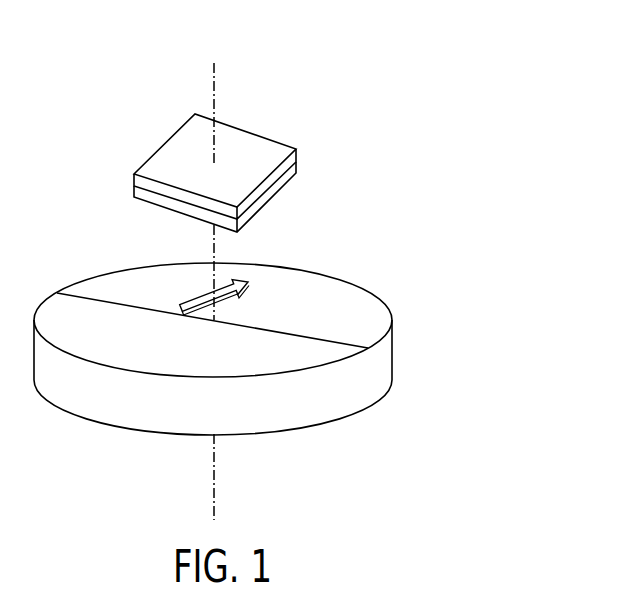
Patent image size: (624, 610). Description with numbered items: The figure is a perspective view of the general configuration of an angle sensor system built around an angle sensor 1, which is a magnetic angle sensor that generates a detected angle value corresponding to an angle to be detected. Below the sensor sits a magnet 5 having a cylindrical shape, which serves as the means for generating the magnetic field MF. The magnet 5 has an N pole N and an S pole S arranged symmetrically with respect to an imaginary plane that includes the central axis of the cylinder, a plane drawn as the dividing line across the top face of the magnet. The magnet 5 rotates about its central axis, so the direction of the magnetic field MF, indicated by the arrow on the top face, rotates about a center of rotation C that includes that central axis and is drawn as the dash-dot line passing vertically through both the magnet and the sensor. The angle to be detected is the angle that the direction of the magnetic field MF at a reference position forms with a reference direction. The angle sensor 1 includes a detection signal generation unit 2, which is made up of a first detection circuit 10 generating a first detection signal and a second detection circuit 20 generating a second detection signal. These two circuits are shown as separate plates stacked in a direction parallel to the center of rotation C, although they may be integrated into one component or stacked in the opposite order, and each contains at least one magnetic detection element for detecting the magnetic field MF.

The angle sensor 1 is at (244, 269).
The detection signal generation unit 2 is at (273, 173).
The first detection circuit 10 is at (297, 152).
The second detection circuit 20 is at (298, 165).
The magnet 5 is at (244, 322).
The magnetic field MF is at (204, 291).
The center of rotation C is at (219, 481).
The N pole N is at (170, 340).
The S pole S is at (273, 288).